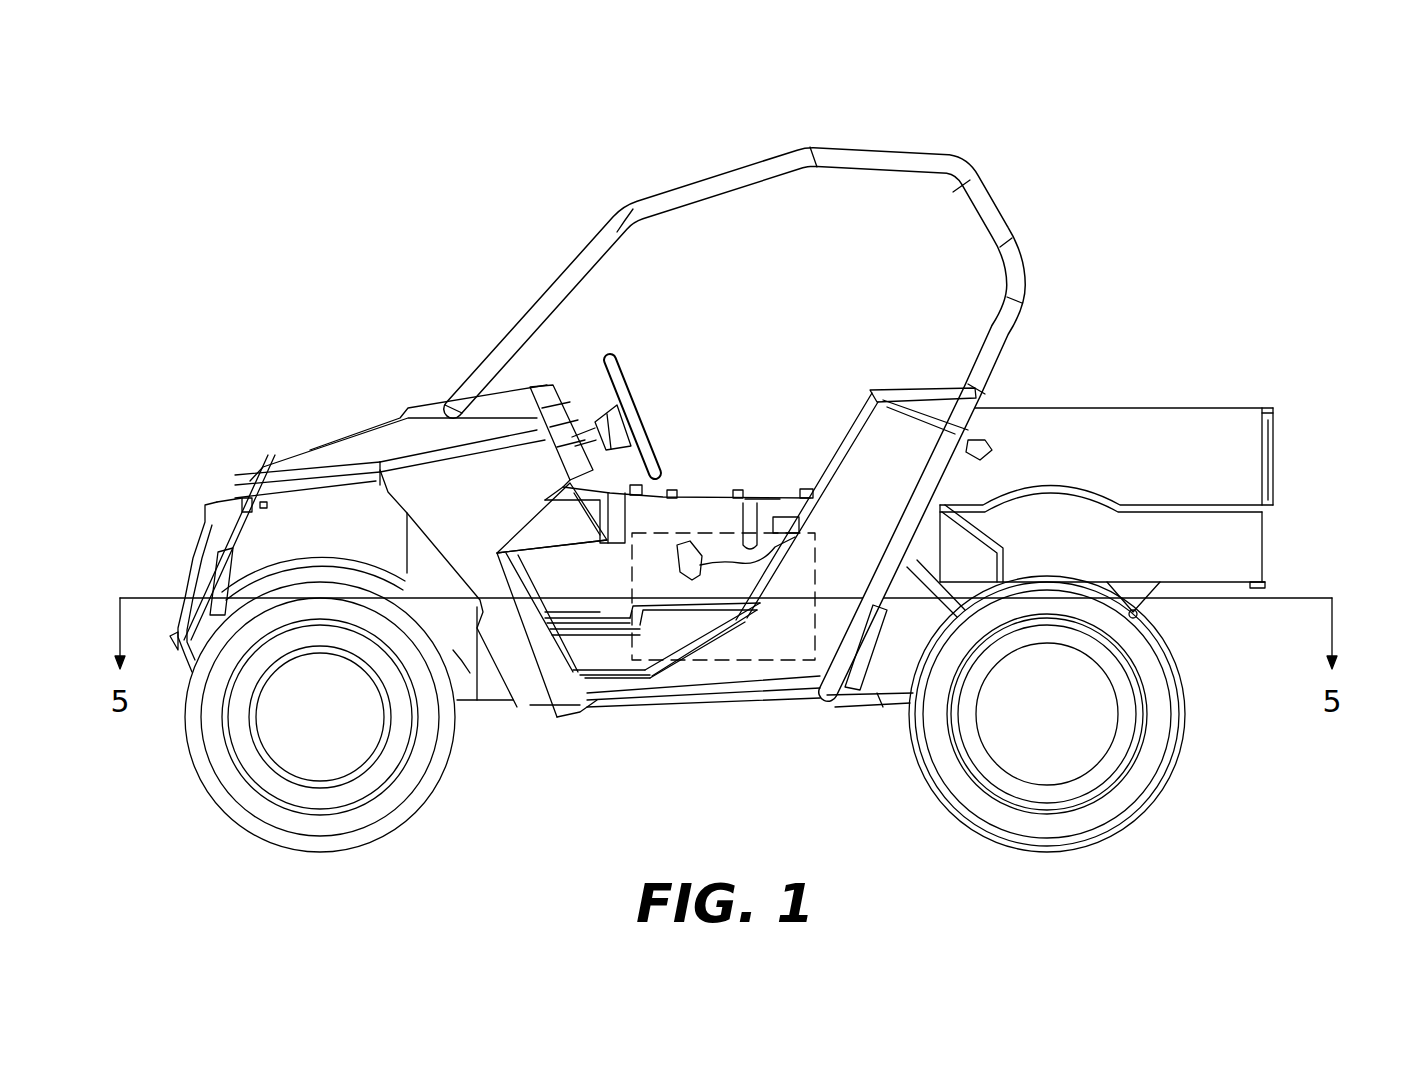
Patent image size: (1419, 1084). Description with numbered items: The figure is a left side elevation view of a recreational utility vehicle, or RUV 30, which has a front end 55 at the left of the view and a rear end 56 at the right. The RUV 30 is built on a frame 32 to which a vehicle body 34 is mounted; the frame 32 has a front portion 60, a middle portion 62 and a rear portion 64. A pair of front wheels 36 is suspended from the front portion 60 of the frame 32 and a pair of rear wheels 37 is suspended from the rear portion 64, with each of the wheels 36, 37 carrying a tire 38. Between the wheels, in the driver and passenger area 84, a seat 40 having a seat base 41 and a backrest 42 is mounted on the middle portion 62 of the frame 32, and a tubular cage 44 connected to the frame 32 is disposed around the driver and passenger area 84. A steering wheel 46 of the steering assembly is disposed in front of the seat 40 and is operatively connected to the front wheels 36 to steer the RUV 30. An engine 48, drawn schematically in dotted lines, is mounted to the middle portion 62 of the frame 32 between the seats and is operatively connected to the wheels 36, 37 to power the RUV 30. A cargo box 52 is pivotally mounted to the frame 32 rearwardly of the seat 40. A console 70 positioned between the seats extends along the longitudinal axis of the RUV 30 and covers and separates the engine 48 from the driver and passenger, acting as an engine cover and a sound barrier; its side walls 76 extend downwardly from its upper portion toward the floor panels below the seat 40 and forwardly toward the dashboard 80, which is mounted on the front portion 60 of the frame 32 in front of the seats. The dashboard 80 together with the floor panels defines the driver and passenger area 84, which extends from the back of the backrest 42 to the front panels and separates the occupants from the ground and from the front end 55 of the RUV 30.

The recreational utility vehicle 30 is at (478, 205).
The frame 32 is at (883, 703).
The vehicle body 34 is at (377, 437).
The front wheels 36 is at (310, 770).
The rear wheels 37 is at (1043, 770).
The tire 38 is at (246, 816).
The seat 40 is at (792, 470).
The seat base 41 is at (745, 545).
The backrest 42 is at (838, 427).
The tubular cage 44 is at (978, 190).
The steering wheel 46 is at (624, 380).
The engine 48 is at (637, 575).
The cargo box 52 is at (1205, 433).
The front end 55 is at (310, 487).
The rear end 56 is at (1312, 445).
The front portion 60 is at (462, 690).
The middle portion 62 is at (651, 695).
The rear portion 64 is at (890, 692).
The console 70 is at (687, 497).
The side walls 76 is at (591, 589).
The dashboard 80 is at (523, 468).
The driver and passenger area 84 is at (762, 457).